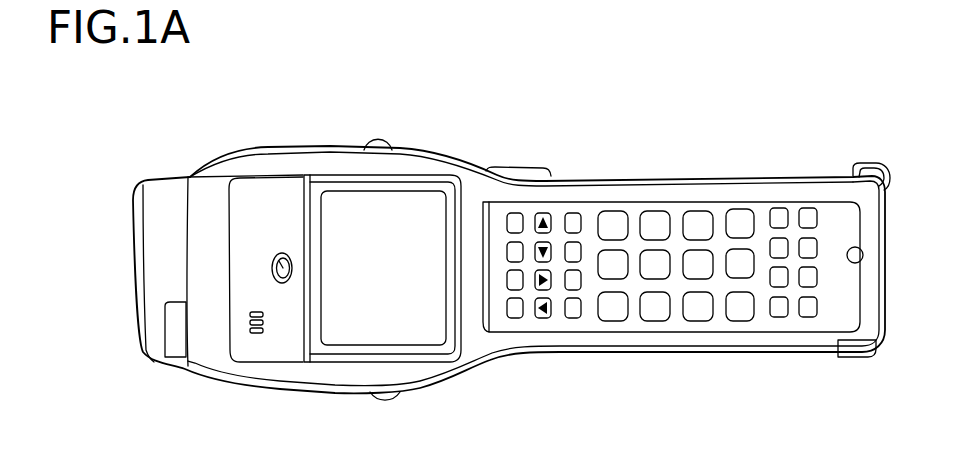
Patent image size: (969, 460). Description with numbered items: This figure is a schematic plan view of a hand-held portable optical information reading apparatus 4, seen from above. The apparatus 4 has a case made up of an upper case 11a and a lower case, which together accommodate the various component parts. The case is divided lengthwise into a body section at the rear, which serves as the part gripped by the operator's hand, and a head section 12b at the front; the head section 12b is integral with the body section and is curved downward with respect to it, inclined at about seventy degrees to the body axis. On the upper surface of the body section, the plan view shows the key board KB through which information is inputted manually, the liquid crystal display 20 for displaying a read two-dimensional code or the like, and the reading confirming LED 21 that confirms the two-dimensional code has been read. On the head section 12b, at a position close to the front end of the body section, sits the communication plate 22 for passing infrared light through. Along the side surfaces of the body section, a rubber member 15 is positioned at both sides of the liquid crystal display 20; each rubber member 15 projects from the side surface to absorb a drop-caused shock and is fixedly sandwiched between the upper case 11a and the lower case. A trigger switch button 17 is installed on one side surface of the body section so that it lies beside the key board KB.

The optical information reading apparatus 4 is at (489, 129).
The upper case 11a is at (763, 190).
The head section 12b is at (168, 206).
The rubber member 15 is at (380, 138).
The trigger switch button 17 is at (525, 168).
The liquid crystal display 20 is at (352, 330).
The reading confirming LED 21 is at (281, 258).
The communication plate 22 is at (179, 343).
The key board KB is at (717, 311).